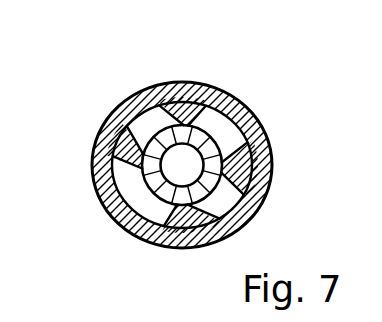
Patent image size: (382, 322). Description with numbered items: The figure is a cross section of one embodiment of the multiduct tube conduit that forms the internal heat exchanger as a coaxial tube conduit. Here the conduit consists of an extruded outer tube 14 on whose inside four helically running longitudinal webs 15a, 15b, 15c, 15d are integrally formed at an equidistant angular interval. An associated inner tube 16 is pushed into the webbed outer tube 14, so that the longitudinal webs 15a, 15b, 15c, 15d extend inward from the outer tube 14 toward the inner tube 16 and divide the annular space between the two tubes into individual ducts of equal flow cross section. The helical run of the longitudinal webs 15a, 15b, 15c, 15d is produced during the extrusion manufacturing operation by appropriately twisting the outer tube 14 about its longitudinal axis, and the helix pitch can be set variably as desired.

The outer tube 14 is at (233, 90).
The longitudinal web 15a is at (191, 211).
The longitudinal web 15b is at (241, 158).
The longitudinal web 15c is at (180, 113).
The longitudinal web 15d is at (128, 181).
The inner tube 16 is at (142, 168).